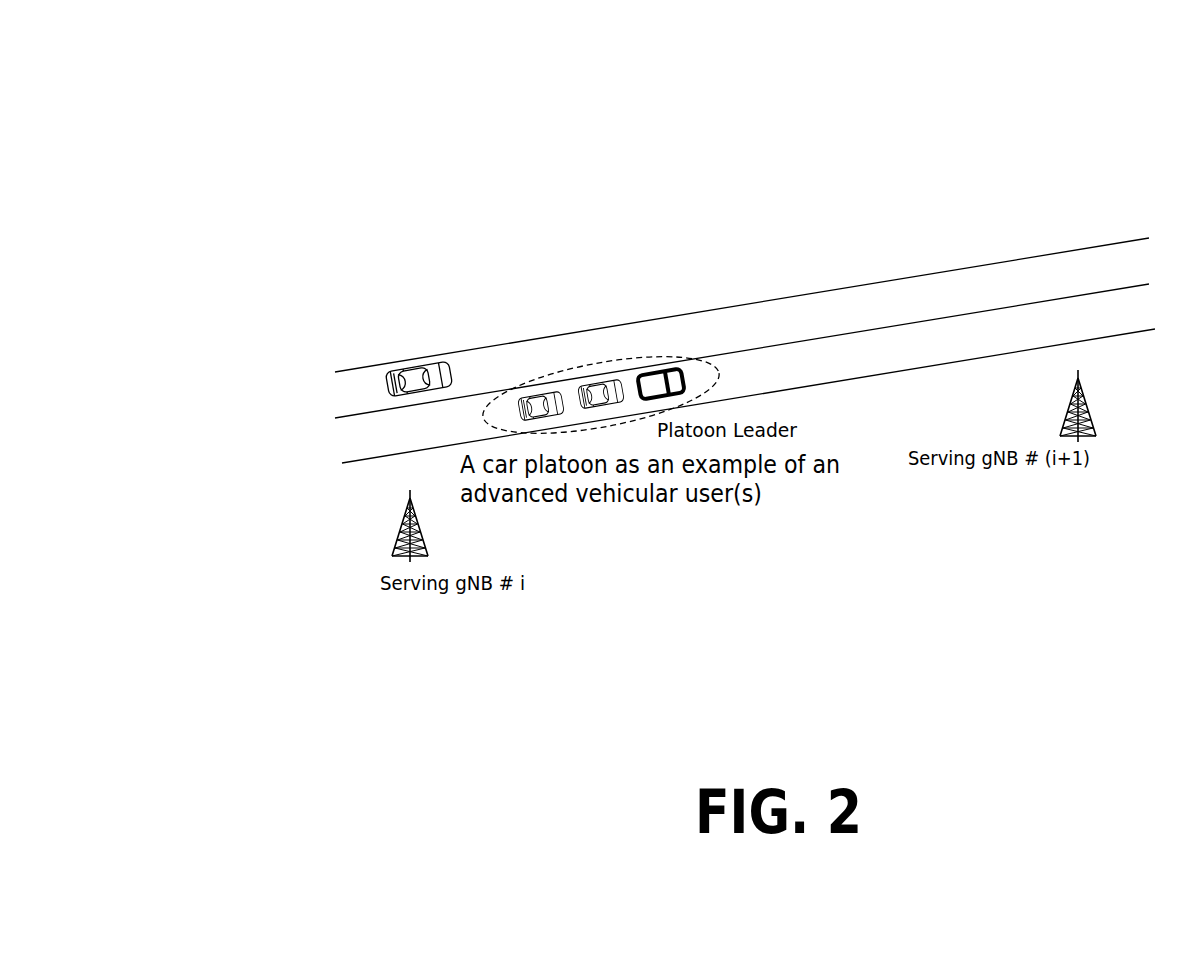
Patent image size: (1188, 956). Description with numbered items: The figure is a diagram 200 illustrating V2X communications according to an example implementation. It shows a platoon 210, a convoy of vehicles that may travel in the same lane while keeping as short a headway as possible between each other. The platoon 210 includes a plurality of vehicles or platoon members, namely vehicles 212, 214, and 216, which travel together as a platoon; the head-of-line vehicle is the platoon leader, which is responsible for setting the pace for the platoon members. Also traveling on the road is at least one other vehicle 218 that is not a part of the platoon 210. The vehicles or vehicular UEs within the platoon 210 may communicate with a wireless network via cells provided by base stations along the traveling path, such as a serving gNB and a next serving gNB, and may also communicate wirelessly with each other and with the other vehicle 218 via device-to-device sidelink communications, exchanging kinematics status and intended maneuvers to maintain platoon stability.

The diagram 200 is at (232, 98).
The platoon 210 is at (567, 373).
The vehicle 212 is at (665, 375).
The vehicle 214 is at (613, 400).
The vehicle 216 is at (545, 415).
The other vehicle 218 is at (410, 372).